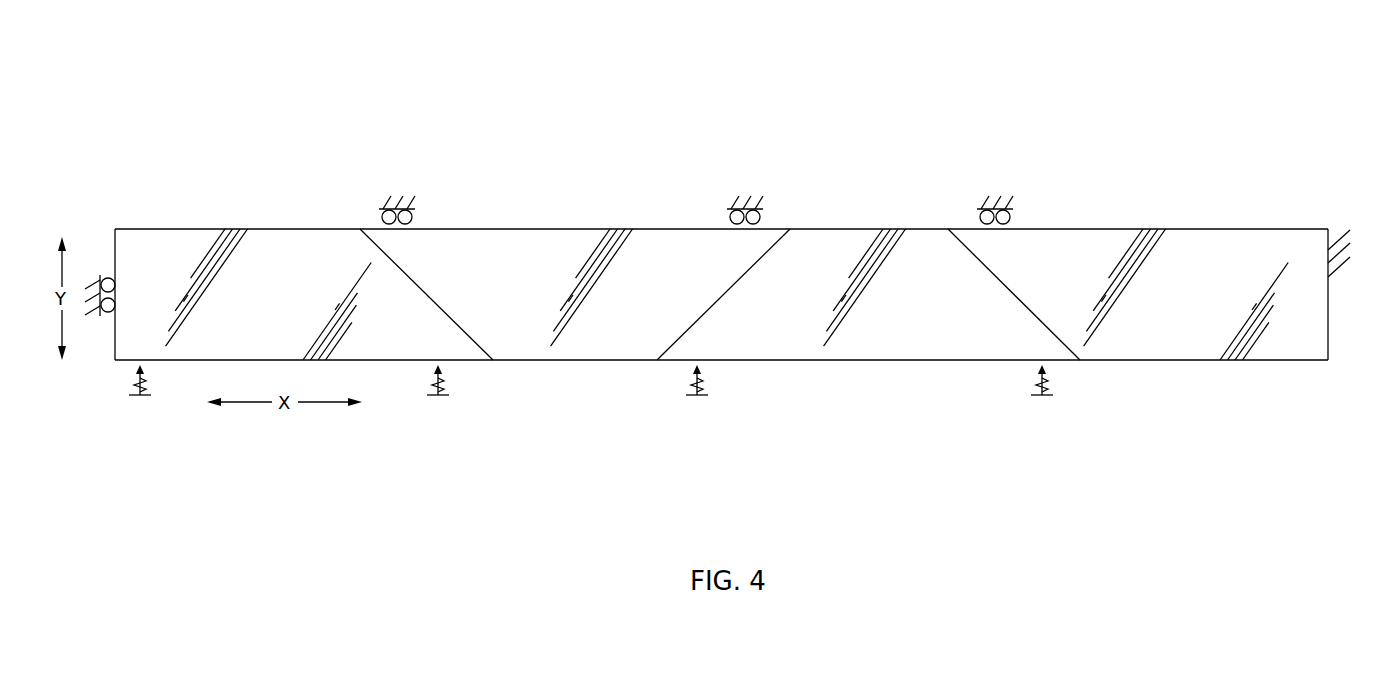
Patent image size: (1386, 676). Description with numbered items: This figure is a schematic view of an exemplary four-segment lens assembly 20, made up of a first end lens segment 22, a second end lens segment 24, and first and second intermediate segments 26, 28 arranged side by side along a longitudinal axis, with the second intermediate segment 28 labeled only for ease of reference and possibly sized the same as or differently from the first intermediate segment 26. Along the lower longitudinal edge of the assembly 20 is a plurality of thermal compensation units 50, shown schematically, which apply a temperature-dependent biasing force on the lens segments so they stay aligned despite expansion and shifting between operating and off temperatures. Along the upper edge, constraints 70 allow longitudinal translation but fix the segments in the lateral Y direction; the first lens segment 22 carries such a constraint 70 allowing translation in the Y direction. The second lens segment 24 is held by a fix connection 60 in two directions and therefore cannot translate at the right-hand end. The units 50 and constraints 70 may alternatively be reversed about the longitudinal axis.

The lens assembly 20 is at (398, 83).
The first end lens segment 22 is at (193, 243).
The second end lens segment 24 is at (1183, 345).
The first intermediate segment 26 is at (547, 243).
The second intermediate segment 28 is at (832, 243).
The thermal compensation unit 50 is at (148, 406).
The fix connection 60 is at (1330, 230).
The constraint 70 is at (97, 267).